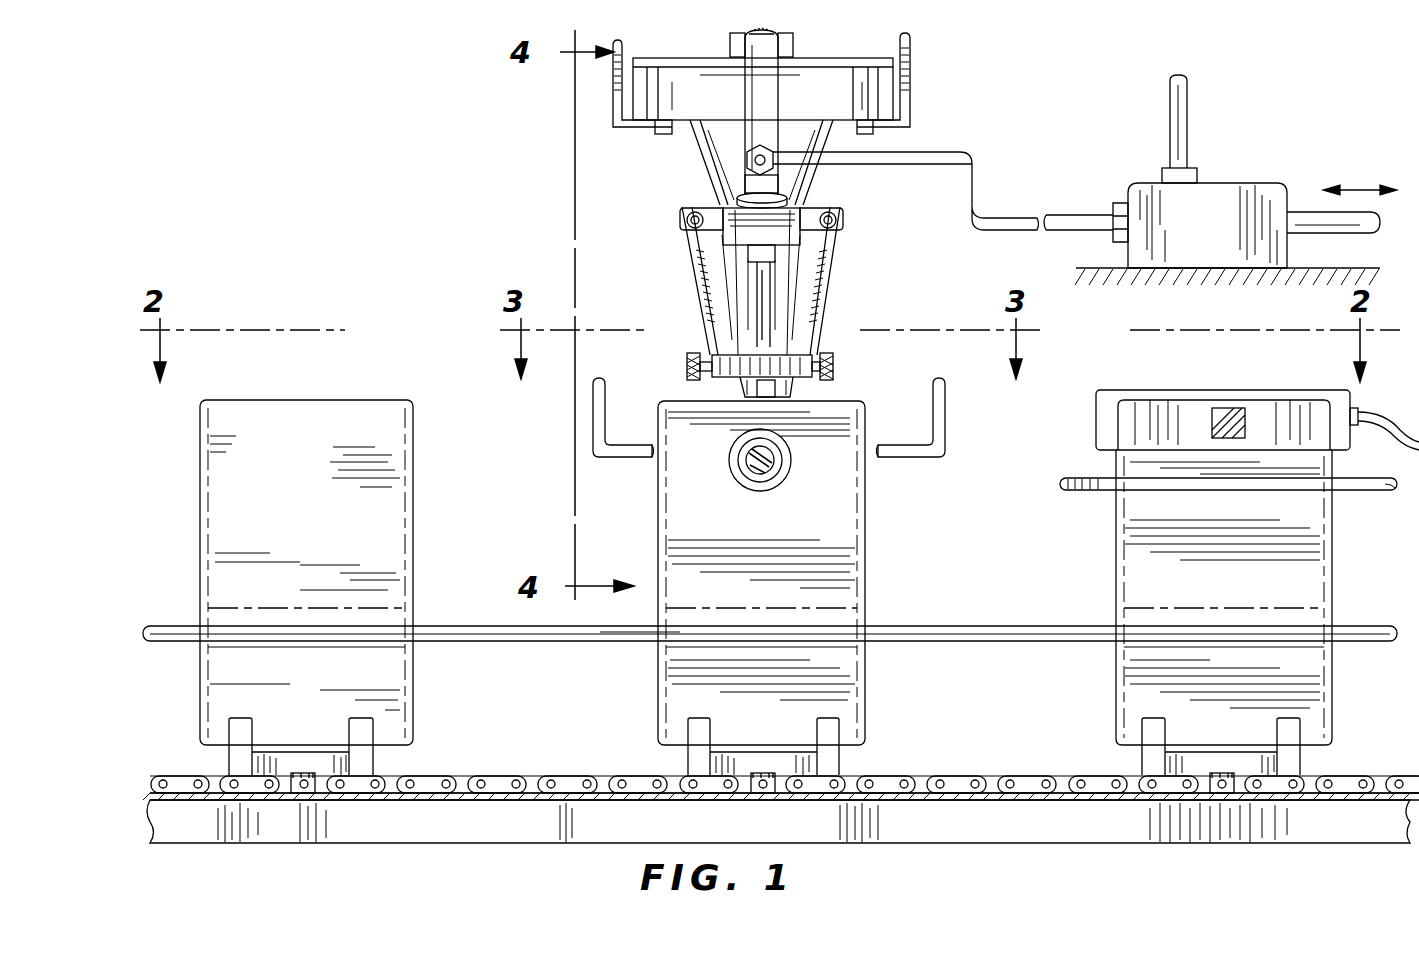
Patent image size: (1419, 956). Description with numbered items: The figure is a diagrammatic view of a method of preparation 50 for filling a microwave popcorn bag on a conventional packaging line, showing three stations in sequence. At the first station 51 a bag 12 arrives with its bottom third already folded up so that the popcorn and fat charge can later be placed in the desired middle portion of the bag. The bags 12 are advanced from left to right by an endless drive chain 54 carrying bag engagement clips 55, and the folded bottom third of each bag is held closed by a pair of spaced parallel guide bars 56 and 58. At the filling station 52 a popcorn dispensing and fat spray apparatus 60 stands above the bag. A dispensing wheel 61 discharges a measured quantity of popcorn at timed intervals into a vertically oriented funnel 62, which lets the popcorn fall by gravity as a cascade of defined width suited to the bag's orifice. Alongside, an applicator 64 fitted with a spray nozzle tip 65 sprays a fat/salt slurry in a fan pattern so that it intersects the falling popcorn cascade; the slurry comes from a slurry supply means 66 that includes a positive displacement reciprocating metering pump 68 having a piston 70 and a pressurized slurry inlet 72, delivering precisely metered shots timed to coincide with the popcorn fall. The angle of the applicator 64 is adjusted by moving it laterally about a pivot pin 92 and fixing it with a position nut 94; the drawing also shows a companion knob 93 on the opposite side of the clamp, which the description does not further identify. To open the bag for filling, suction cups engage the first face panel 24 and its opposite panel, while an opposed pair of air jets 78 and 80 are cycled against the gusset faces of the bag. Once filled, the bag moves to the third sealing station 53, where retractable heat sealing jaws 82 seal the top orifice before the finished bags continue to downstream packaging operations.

The bag 12 is at (420, 422).
The first face panel 24 is at (332, 535).
The method of preparation 50 is at (577, 266).
The first station 51 is at (416, 494).
The filling station 52 is at (866, 592).
The third sealing station 53 is at (1334, 566).
The endless drive chain 54 is at (548, 775).
The bag engagement clips 55 is at (360, 742).
The parallel guide bar 56 is at (458, 630).
The parallel guide bar 58 is at (626, 652).
The popcorn dispensing and fat spray apparatus 60 is at (697, 150).
The dispensing wheel 61 is at (812, 92).
The funnel 62 is at (700, 183).
The applicator 64 is at (768, 304).
The spray nozzle tip 65 is at (795, 393).
The slurry supply means 66 is at (968, 192).
The metering pump 68 is at (1268, 205).
The piston 70 is at (762, 90).
The pressurized slurry inlet 72 is at (1182, 102).
The air jet 78 is at (596, 444).
The air jet 80 is at (945, 434).
The retractable heat sealing jaws 82 is at (1274, 396).
The pivot pin 92 is at (690, 360).
The right adjustment knob 93 is at (833, 365).
The position nut 94 is at (842, 218).